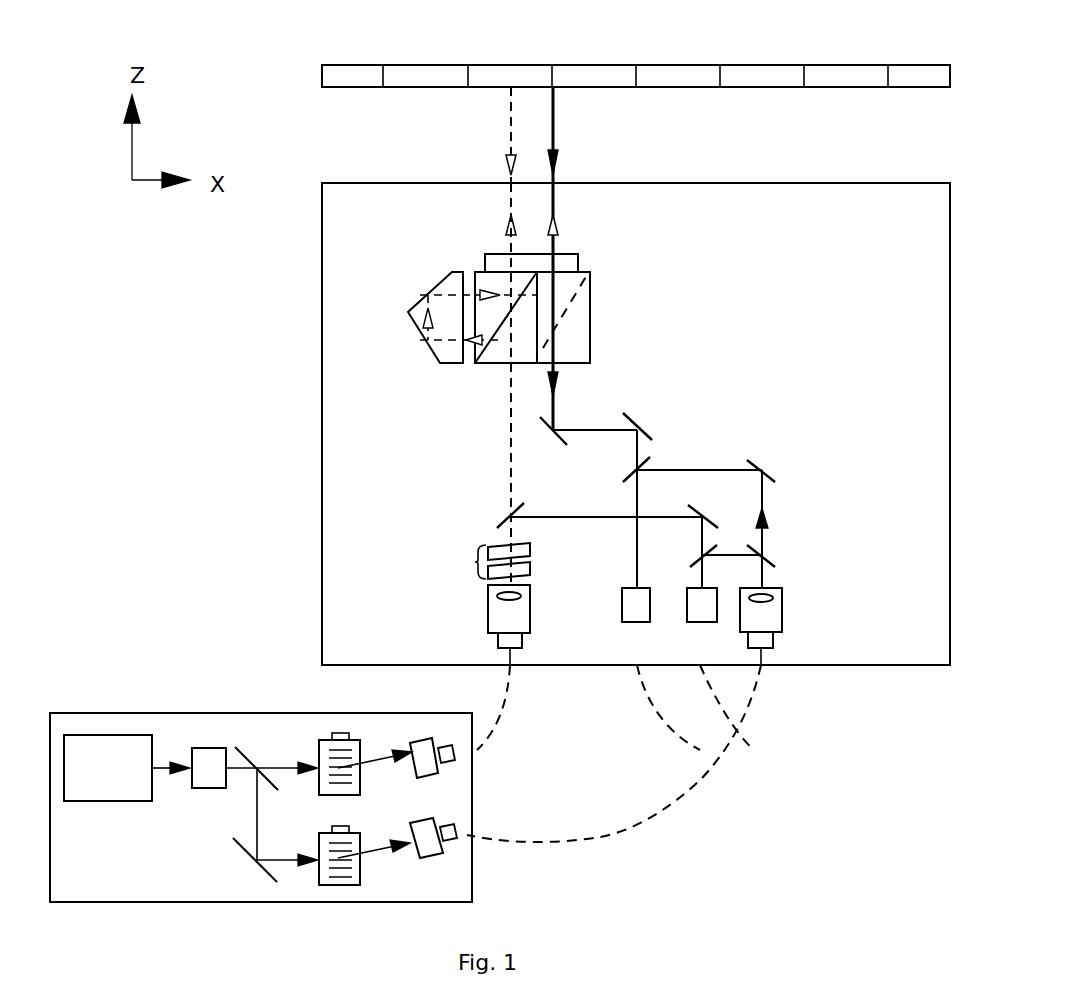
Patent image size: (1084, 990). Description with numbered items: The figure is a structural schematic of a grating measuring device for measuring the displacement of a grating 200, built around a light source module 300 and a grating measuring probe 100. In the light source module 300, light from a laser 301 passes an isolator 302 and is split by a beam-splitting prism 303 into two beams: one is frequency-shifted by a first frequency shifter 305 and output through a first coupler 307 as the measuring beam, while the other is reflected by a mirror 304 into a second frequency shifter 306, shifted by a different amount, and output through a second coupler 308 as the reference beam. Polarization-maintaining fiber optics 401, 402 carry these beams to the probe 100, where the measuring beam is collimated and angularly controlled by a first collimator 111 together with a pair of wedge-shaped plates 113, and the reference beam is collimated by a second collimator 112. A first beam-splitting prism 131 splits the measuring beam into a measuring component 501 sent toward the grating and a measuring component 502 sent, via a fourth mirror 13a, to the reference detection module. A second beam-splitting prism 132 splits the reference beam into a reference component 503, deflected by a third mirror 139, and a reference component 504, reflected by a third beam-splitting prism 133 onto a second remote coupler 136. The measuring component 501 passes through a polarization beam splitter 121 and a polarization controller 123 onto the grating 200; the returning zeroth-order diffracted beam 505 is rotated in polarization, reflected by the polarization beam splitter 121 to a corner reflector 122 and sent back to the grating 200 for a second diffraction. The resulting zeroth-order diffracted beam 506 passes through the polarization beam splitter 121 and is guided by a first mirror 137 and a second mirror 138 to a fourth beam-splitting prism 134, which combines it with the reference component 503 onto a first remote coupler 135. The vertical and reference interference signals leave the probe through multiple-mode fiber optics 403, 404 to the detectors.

The grating 200 is at (322, 67).
The grating measuring probe 100 is at (330, 322).
The light source module 300 is at (170, 728).
The zeroth-order diffracted beam 505 is at (528, 130).
The zeroth-order diffracted beam 506 is at (556, 140).
The polarization controller 123 is at (498, 262).
The corner reflector 122 is at (440, 350).
The polarization beam splitter 121 is at (493, 363).
The measuring component 501 is at (506, 448).
The first mirror 137 is at (560, 438).
The second mirror 138 is at (646, 438).
The fourth beam-splitting prism 134 is at (637, 472).
The third mirror 139 is at (770, 468).
The fourth mirror 13a is at (722, 517).
The reference component 503 is at (764, 494).
The first beam-splitting prism 131 is at (514, 502).
The measuring component 502 is at (560, 519).
The third beam-splitting prism 133 is at (700, 556).
The second beam-splitting prism 132 is at (767, 558).
The reference component 504 is at (733, 557).
The pair of wedge-shaped plates 113 is at (476, 562).
The first collimator 111 is at (495, 620).
The first remote coupler 135 is at (628, 623).
The second remote coupler 136 is at (697, 623).
The second collimator 112 is at (773, 621).
The polarization-maintaining fiber optic 401 is at (502, 712).
The polarization-maintaining fiber optic 402 is at (620, 830).
The multiple-mode fiber optic 403 is at (661, 710).
The multiple-mode fiber optic 404 is at (760, 751).
The laser 301 is at (112, 785).
The isolator 302 is at (203, 778).
The beam-splitting prism 303 is at (253, 752).
The mirror 304 is at (243, 850).
The first frequency shifter 305 is at (325, 752).
The second frequency shifter 306 is at (355, 873).
The first coupler 307 is at (418, 748).
The second coupler 308 is at (432, 855).